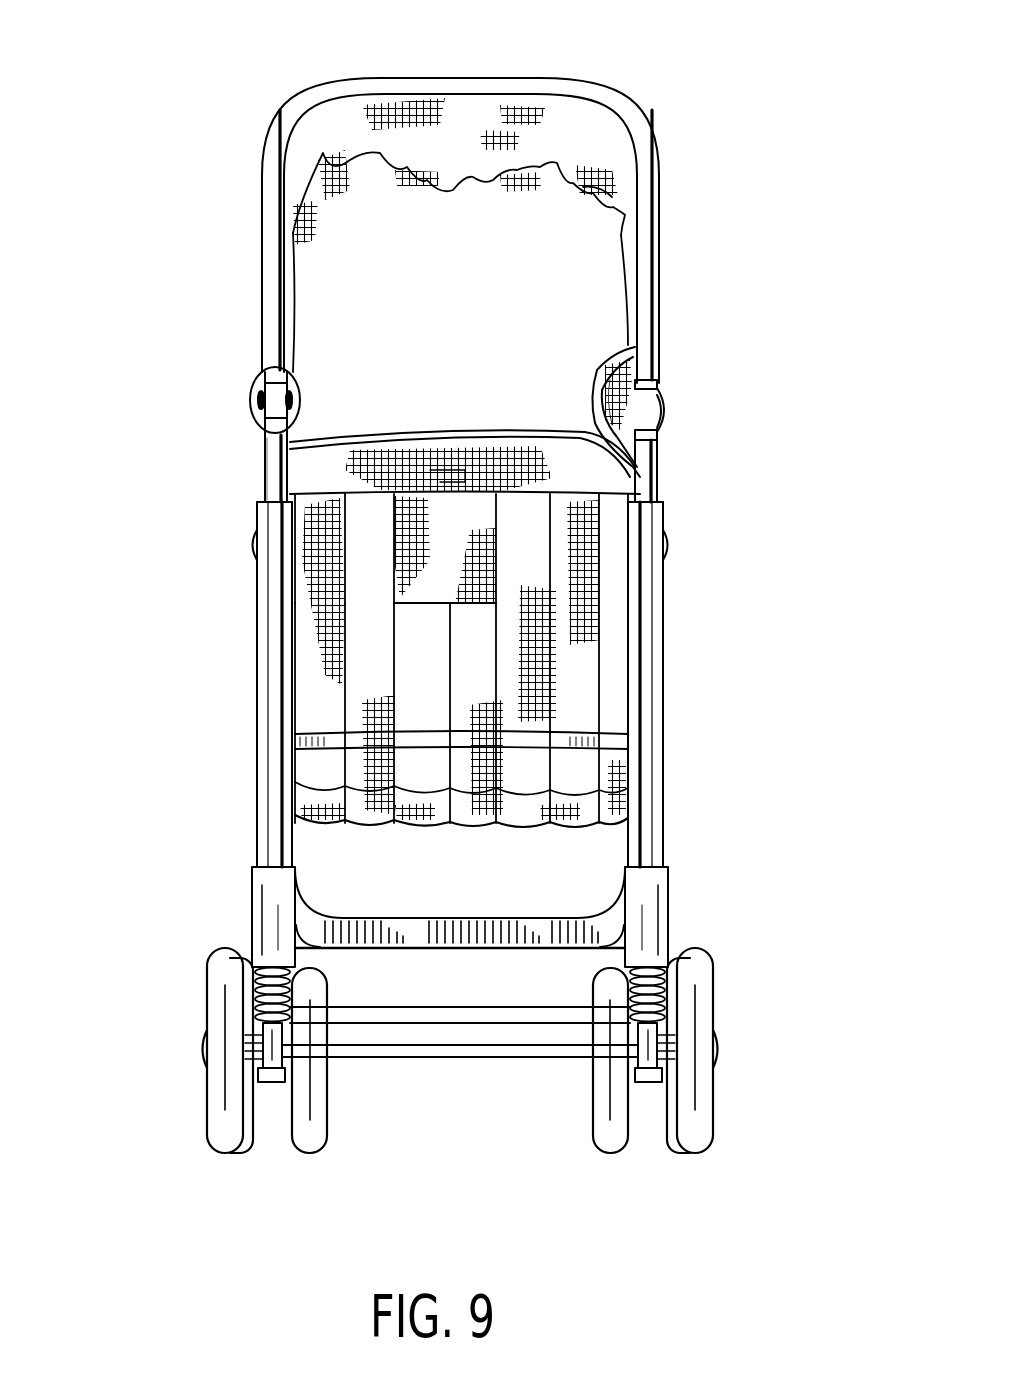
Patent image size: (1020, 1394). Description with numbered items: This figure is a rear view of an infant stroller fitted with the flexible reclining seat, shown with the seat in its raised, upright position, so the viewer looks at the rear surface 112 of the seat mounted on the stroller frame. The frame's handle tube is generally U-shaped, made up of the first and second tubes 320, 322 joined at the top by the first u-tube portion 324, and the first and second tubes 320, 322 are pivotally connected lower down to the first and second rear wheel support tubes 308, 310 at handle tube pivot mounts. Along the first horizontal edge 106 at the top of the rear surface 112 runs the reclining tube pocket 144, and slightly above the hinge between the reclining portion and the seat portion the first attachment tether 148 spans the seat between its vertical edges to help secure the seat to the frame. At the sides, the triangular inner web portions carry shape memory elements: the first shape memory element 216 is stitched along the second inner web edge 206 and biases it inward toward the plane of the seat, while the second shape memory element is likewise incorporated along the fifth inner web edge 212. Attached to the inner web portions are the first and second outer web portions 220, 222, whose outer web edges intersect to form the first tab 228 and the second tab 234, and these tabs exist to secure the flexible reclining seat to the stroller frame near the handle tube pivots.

The first u-tube portion 324 is at (483, 85).
The first tube 320 is at (652, 225).
The second tube 322 is at (270, 258).
The second outer web portion 222 is at (240, 383).
The second tab 234 is at (255, 411).
The fifth inner web edge 212 is at (277, 432).
The first horizontal edge 106 is at (478, 433).
The second inner web edge 206 is at (603, 385).
The first shape memory element 216 is at (610, 402).
The first outer web portion 220 is at (662, 402).
The first tab 228 is at (667, 415).
The reclining tube pocket 144 is at (543, 472).
The rear surface 112 is at (433, 647).
The first attachment tether 148 is at (632, 748).
The second rear wheel support tube 310 is at (273, 797).
The first rear wheel support tube 308 is at (650, 830).